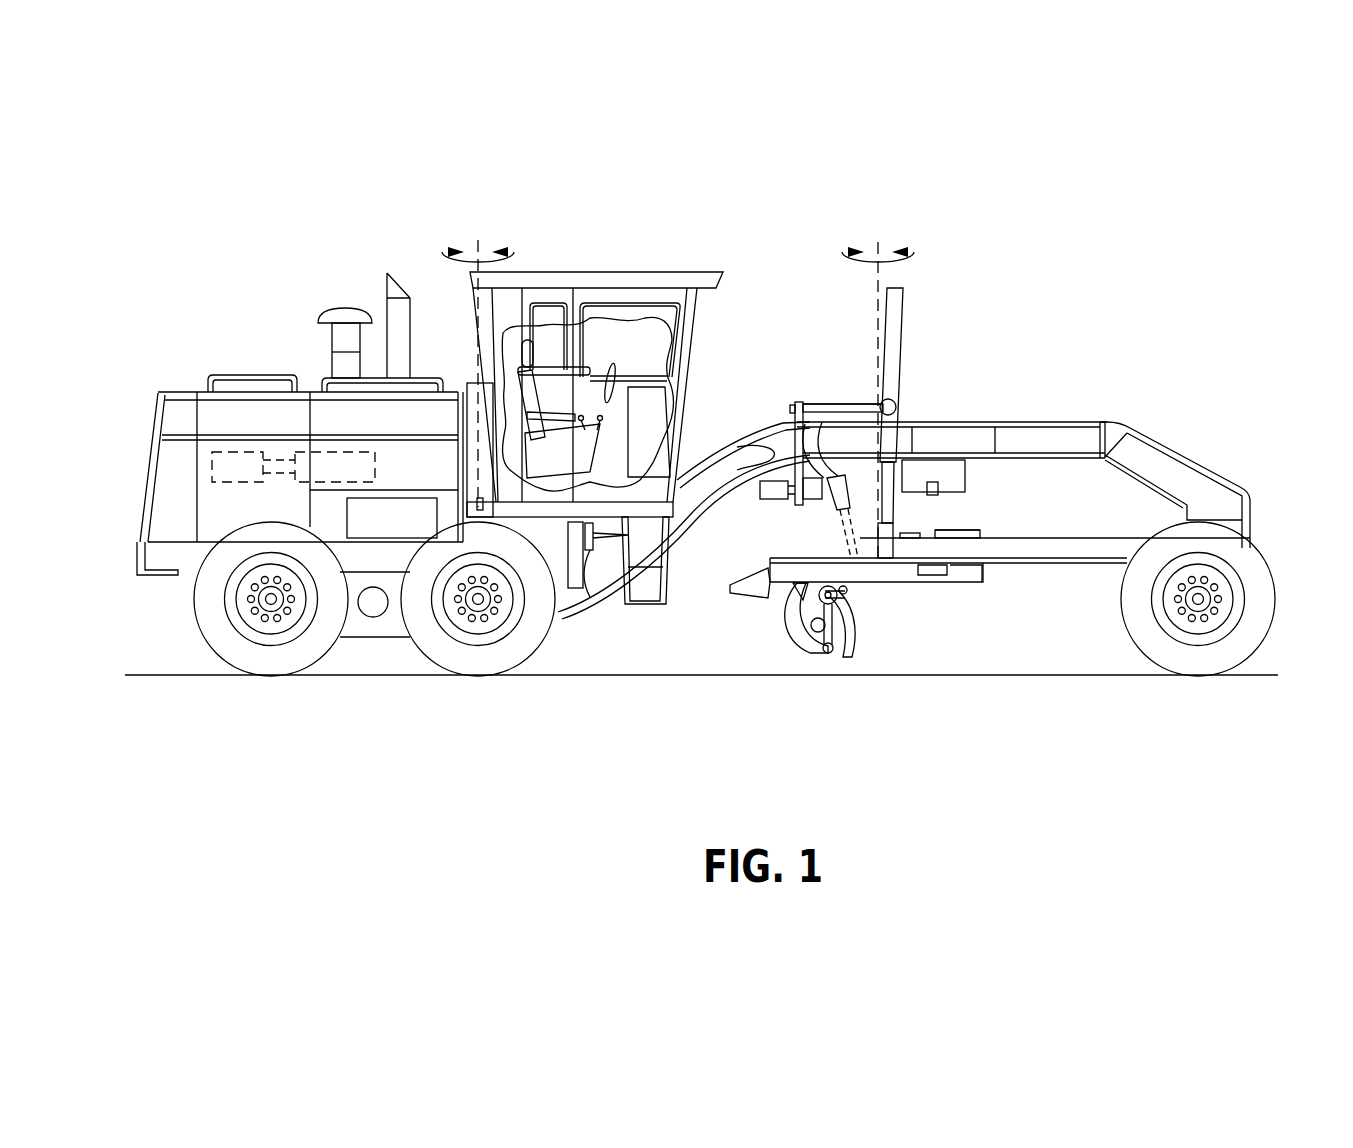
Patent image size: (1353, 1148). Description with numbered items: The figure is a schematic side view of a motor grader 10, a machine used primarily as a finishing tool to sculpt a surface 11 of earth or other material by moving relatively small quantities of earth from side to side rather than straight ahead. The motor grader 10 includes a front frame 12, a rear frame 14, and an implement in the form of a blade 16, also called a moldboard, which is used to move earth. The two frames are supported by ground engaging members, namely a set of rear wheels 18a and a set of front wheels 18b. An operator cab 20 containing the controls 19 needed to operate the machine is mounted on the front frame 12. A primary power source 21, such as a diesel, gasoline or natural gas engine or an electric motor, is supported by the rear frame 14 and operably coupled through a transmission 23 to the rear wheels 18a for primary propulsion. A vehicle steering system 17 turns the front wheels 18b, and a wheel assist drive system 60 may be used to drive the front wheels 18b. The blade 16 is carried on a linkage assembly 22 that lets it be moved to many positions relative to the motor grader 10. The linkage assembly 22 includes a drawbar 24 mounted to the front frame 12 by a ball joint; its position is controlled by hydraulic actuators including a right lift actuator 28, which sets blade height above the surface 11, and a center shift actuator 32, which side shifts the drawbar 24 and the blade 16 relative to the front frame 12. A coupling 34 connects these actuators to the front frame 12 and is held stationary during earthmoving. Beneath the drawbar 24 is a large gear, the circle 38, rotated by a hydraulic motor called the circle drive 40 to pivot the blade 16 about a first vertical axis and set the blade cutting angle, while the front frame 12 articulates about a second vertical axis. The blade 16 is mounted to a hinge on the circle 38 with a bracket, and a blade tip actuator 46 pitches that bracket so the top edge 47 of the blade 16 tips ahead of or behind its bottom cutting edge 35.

The motor grader 10 is at (707, 482).
The surface 11 is at (607, 675).
The front frame 12 is at (880, 538).
The rear frame 14 is at (446, 538).
The blade 16 is at (821, 617).
The vehicle steering system 17 is at (1155, 518).
The rear wheels 18a is at (238, 657).
The front wheels 18b is at (1198, 636).
The controls 19 is at (653, 377).
The operator cab 20 is at (611, 365).
The primary power source 21 is at (240, 462).
The linkage assembly 22 is at (1023, 543).
The transmission 23 is at (325, 462).
The drawbar 24 is at (1062, 560).
The right lift actuator 28 is at (893, 333).
The center shift actuator 32 is at (838, 517).
The coupling 34 is at (832, 437).
The bottom cutting edge 35 is at (848, 658).
The circle 38 is at (965, 590).
The circle drive 40 is at (978, 535).
The blade tip actuator 46 is at (767, 598).
The top edge 47 is at (840, 592).
The wheel assist drive system 60 is at (758, 310).